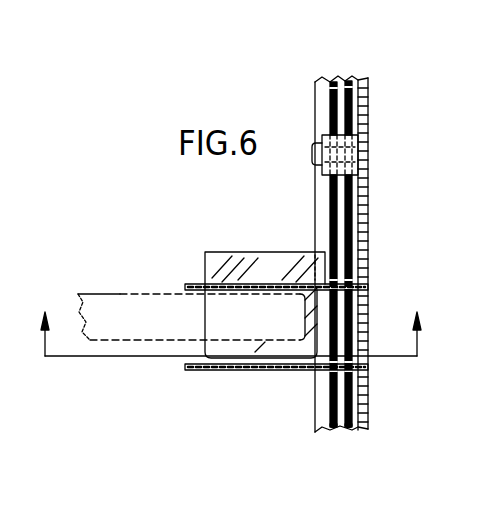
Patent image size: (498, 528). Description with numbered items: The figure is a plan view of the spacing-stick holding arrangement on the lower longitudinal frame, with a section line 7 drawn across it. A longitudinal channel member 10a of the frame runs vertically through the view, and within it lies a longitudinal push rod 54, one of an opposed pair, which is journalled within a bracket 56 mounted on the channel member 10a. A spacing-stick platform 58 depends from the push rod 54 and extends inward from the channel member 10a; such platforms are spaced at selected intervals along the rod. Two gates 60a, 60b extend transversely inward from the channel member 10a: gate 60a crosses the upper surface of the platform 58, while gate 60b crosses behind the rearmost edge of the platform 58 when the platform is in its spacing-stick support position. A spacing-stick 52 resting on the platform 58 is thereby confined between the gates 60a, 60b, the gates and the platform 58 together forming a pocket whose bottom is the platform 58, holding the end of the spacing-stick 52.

The section line 7 is at (226, 327).
The longitudinal channel member 10a is at (362, 421).
The spacing-stick 52 is at (138, 313).
The longitudinal push rod 54 is at (338, 113).
The bracket 56 is at (342, 166).
The spacing-stick platform 58 is at (262, 252).
The gate 60a is at (203, 283).
The gate 60b is at (235, 371).